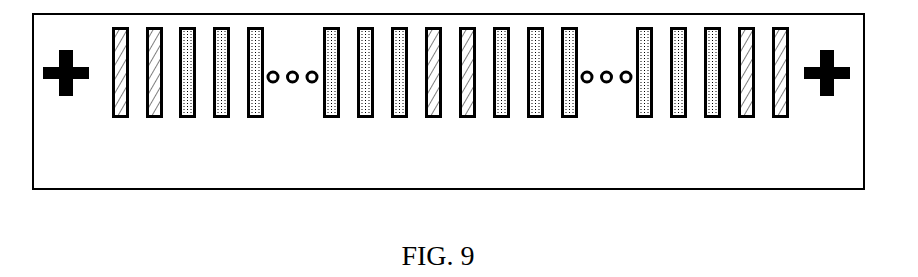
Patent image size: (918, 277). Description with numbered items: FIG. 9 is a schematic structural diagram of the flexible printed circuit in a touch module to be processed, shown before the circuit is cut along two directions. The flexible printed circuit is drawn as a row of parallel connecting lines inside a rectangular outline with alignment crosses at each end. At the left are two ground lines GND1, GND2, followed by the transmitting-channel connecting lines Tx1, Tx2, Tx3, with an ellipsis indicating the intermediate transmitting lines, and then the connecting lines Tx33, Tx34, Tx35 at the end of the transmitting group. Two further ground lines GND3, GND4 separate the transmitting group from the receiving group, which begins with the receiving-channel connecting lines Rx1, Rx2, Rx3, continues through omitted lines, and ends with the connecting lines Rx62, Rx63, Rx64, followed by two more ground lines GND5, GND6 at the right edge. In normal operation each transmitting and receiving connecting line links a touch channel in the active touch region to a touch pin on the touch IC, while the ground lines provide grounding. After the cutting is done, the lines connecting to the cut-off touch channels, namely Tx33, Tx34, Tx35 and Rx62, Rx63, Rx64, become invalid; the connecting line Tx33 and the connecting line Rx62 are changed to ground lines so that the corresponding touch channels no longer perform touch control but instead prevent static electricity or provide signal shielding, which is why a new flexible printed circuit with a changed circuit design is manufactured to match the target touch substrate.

The GND line GND1 is at (120, 107).
The GND line GND2 is at (154, 107).
The connecting line Tx1 is at (190, 88).
The connecting line Tx2 is at (226, 88).
The connecting line Tx3 is at (259, 88).
The connecting line Tx33 is at (332, 98).
The connecting line Tx34 is at (369, 98).
The connecting line Tx35 is at (401, 98).
The GND line GND3 is at (434, 107).
The GND line GND4 is at (469, 107).
The connecting line Rx1 is at (507, 88).
The connecting line Rx2 is at (545, 88).
The connecting line Rx3 is at (576, 88).
The connecting line Rx62 is at (648, 98).
The connecting line Rx63 is at (684, 98).
The connecting line Rx64 is at (716, 98).
The GND line GND5 is at (747, 107).
The GND line GND6 is at (782, 107).